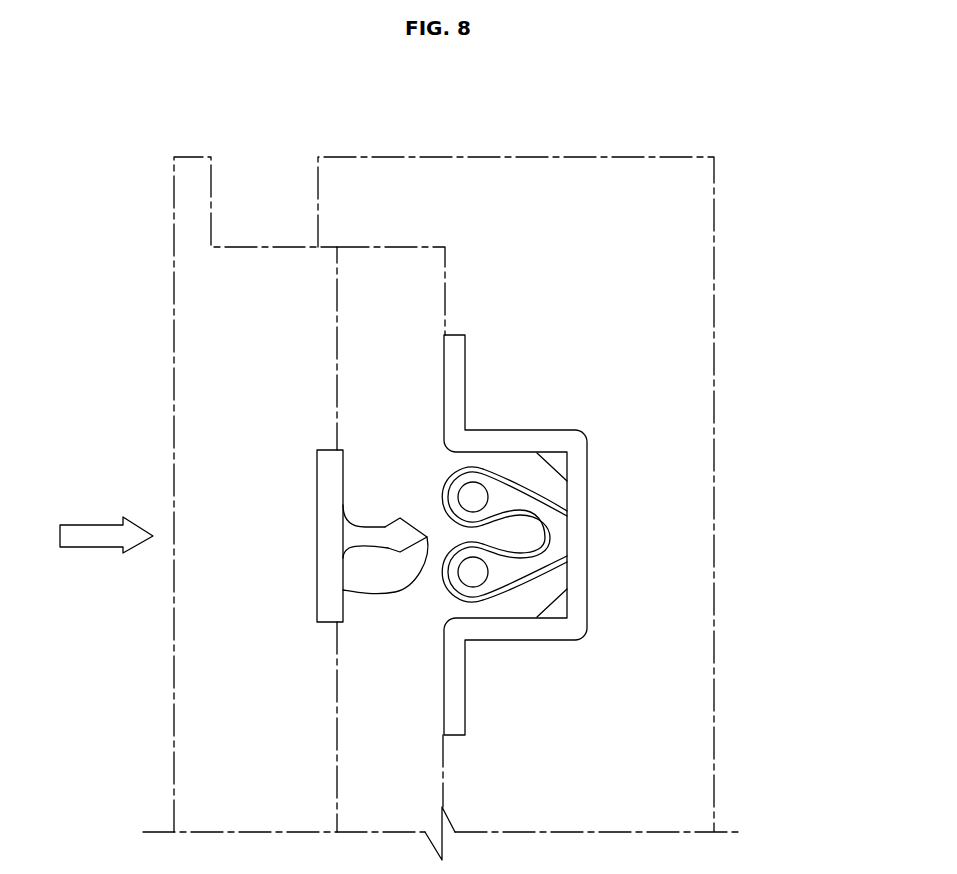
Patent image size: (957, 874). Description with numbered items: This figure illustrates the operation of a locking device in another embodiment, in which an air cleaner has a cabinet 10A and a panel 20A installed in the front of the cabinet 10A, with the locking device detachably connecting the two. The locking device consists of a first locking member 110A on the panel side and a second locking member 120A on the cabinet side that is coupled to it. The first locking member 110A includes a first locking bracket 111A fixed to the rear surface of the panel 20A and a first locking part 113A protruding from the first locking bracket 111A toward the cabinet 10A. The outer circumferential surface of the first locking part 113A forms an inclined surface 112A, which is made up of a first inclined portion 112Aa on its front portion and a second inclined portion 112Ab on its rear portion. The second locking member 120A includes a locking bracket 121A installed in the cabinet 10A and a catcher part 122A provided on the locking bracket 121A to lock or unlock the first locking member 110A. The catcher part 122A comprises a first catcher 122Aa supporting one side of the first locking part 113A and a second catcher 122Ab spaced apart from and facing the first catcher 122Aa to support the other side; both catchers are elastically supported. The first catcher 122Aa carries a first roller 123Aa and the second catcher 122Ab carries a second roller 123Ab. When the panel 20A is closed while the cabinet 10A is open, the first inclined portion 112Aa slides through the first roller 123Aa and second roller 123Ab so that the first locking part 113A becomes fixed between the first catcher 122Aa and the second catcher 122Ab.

The cabinet 10A is at (520, 178).
The panel 20A is at (195, 363).
The first locking member 110A is at (306, 496).
The first locking bracket 111A is at (327, 465).
The inclined surface 112A is at (306, 538).
The first inclined portion 112Aa is at (365, 592).
The second inclined portion 112Ab is at (347, 552).
The first locking part 113A is at (400, 518).
The second locking member 120A is at (654, 535).
The locking bracket 121A is at (457, 360).
The catcher part 122A is at (675, 535).
The first catcher 122Aa is at (507, 492).
The second catcher 122Ab is at (507, 578).
The first roller 123Aa is at (473, 470).
The second roller 123Ab is at (473, 602).